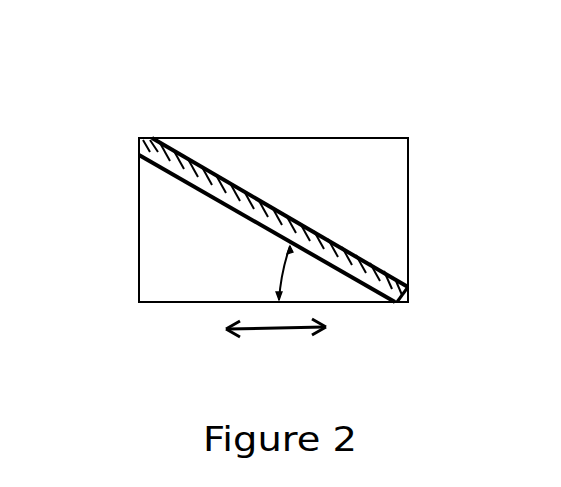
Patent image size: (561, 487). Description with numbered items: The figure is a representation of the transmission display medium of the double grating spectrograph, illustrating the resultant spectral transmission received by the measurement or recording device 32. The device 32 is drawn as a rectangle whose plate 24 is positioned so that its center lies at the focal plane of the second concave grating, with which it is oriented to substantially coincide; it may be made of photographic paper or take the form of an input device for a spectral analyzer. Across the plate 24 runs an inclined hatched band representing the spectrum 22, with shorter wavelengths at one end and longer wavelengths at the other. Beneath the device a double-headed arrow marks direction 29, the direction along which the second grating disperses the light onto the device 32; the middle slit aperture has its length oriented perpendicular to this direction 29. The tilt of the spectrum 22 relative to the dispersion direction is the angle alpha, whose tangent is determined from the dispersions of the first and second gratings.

The substrate plate 24 is at (310, 156).
The measurement or recording device 32 is at (139, 198).
The spectrum 22 is at (408, 292).
The direction of dispersion 29 is at (276, 344).
The angle α alpha is at (282, 277).